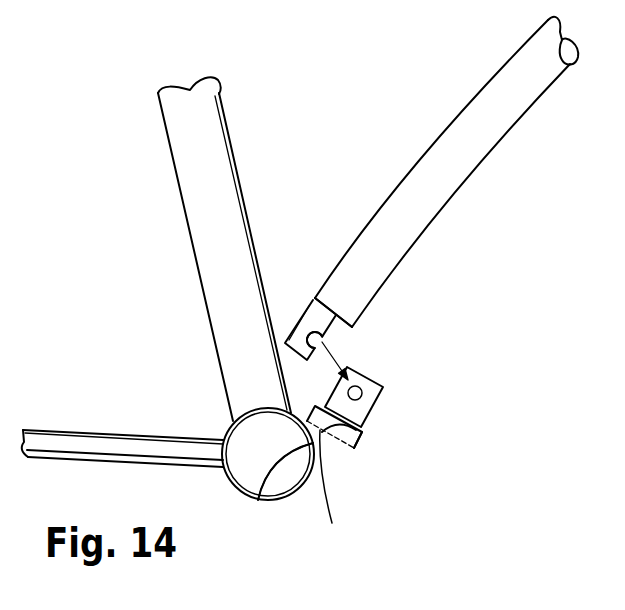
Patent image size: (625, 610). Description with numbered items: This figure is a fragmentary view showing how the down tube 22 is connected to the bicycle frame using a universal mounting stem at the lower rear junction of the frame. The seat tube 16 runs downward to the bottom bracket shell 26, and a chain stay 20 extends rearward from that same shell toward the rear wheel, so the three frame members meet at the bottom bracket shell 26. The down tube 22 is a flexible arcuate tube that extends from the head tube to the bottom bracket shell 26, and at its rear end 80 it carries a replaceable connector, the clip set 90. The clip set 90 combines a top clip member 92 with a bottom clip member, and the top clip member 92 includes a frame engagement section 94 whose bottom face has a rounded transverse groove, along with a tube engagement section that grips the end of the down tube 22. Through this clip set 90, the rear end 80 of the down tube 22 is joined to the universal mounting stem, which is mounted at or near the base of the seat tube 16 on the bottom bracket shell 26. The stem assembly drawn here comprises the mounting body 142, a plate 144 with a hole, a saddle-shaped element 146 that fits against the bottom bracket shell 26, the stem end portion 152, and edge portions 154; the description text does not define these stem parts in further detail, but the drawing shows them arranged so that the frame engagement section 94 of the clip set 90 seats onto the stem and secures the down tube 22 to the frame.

The seat tube 16 is at (194, 258).
The chain stay 20 is at (137, 435).
The down tube 22 is at (440, 212).
The bottom bracket shell 26 is at (222, 430).
The rear end 80 is at (362, 312).
The clip set 90 is at (298, 301).
The top clip member 92 is at (292, 337).
The frame engagement section 94 is at (320, 352).
The bracket bar 142 is at (370, 453).
The mounting plate 144 is at (379, 403).
The saddle member 146 is at (335, 490).
The bracket end 152 is at (365, 428).
The clamp edge 154 is at (262, 490).